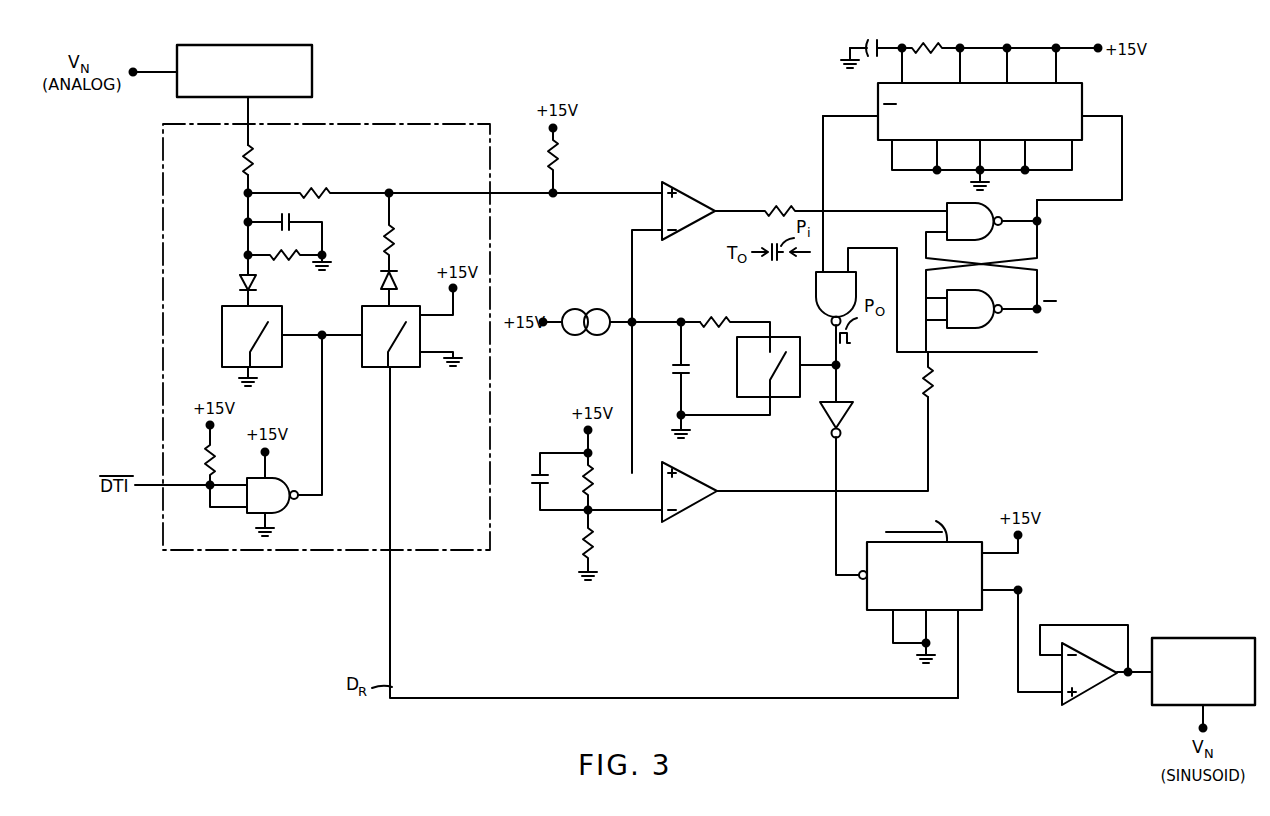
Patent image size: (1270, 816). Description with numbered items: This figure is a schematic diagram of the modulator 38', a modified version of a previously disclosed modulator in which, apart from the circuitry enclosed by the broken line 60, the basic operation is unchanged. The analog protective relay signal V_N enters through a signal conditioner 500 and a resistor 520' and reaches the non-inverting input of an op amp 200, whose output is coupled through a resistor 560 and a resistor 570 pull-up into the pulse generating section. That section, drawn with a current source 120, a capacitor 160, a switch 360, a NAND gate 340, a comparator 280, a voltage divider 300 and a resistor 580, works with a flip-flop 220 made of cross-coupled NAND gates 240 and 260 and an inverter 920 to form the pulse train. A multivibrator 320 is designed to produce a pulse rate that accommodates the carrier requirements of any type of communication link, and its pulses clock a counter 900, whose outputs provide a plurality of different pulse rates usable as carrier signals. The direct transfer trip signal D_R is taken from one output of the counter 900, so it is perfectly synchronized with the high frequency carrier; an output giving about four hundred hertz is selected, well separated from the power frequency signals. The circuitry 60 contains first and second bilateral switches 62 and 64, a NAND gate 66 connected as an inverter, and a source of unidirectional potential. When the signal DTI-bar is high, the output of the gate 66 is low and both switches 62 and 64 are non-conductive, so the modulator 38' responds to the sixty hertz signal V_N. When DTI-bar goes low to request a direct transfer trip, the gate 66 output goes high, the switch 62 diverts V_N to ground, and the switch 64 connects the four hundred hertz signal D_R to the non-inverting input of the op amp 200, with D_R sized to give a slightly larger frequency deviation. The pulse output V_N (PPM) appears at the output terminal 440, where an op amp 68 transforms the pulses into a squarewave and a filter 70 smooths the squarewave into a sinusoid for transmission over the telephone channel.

The signal conditioner 500 is at (313, 67).
The resistor 520' is at (274, 158).
The circuitry 60 is at (225, 553).
The first bilateral switch 62 is at (222, 310).
The second bilateral switch 64 is at (358, 312).
The NAND gate 66 is at (280, 486).
The resistor 570 is at (547, 166).
The op amp 200 is at (678, 182).
The resistor 560 is at (777, 201).
The current source 120 is at (589, 306).
The capacitor 160 is at (668, 372).
The analog switch 360 is at (736, 358).
The NAND gate 340 is at (857, 290).
The multivibrator 320 is at (878, 134).
The NAND gate 240 is at (952, 205).
The NAND gate 260 is at (985, 328).
The flip-flop 220 is at (994, 268).
The resistor 580 is at (935, 383).
The inverter 920 is at (842, 436).
The comparator 280 is at (708, 485).
The voltage divider network 300 is at (570, 539).
The counter 900 is at (867, 603).
The output terminal 440 is at (1016, 607).
The op amp 68 is at (1091, 662).
The filter 70 is at (1179, 638).
The modulator 38' is at (1174, 275).